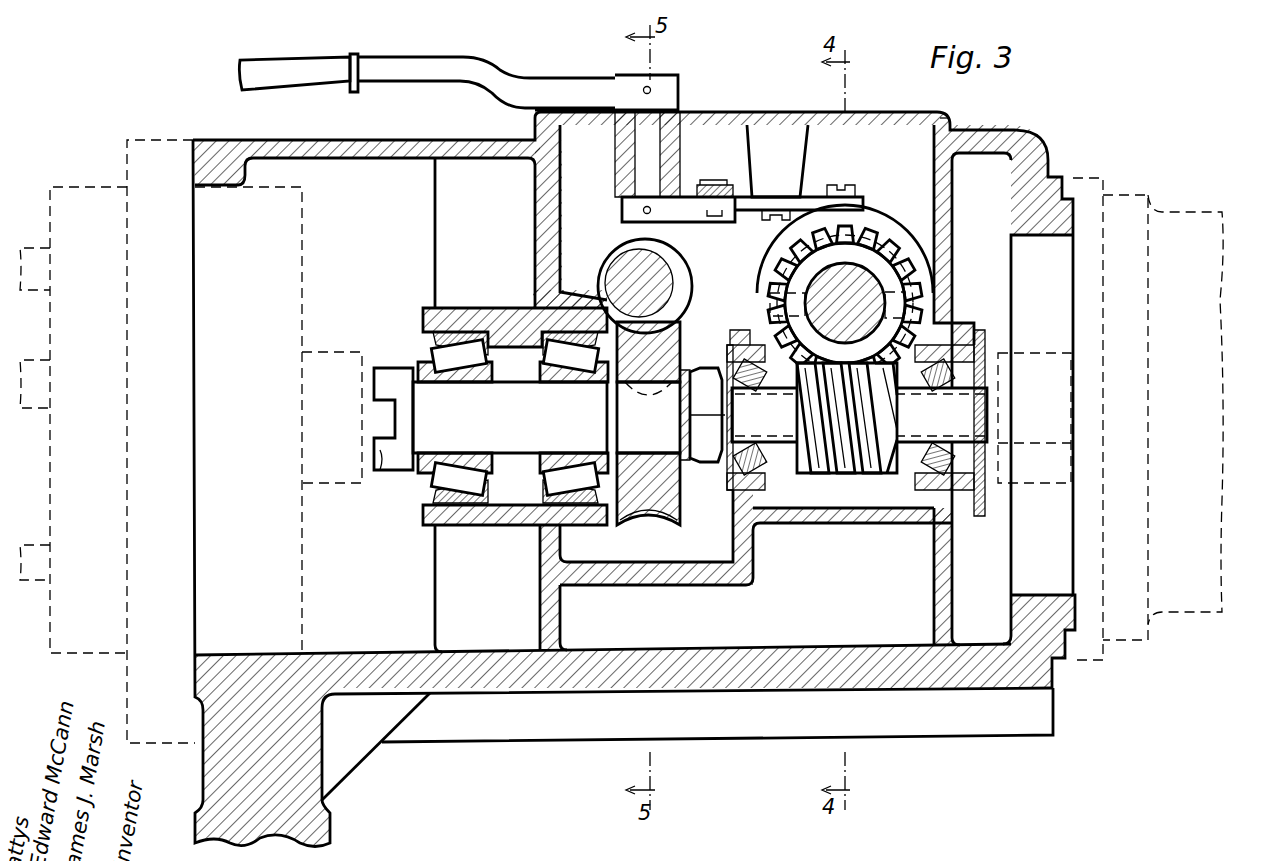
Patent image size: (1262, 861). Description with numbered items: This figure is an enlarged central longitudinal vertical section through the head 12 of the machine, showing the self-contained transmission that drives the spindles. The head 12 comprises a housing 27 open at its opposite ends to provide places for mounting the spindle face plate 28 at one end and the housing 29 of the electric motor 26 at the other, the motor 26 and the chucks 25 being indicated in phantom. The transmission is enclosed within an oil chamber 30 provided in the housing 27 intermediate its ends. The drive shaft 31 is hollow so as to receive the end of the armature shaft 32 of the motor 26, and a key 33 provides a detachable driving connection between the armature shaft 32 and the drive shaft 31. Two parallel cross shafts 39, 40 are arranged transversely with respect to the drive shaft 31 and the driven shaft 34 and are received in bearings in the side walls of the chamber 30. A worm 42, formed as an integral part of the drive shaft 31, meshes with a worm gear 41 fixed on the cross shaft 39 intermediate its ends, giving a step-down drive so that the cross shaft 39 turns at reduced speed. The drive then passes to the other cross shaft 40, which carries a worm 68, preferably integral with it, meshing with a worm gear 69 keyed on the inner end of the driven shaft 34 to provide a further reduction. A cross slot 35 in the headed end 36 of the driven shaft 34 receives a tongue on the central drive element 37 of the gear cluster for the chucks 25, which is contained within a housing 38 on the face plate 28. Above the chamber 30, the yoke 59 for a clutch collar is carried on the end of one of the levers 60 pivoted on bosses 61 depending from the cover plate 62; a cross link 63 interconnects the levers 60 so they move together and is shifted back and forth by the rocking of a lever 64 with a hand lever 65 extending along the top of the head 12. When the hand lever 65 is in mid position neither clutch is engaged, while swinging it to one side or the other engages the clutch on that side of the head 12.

The head 12 is at (1048, 133).
The chucks 25 is at (50, 240).
The motor 26 is at (1205, 214).
The housing 27 is at (414, 140).
The spindle face plate 28 is at (128, 140).
The housing of the electric motor 29 is at (1103, 183).
The oil chamber 30 is at (928, 252).
The drive shaft 31 is at (859, 415).
The armature shaft 32 is at (995, 440).
The key 33 is at (990, 392).
The driven shaft 34 is at (510, 407).
The cross slot 35 is at (380, 470).
The headed end 36 is at (400, 368).
The central drive element 37 is at (320, 483).
The housing 38 is at (302, 293).
The cross shaft 39 is at (770, 300).
The cross shaft 40 is at (680, 292).
The worm gear 41 is at (860, 262).
The worm 42 is at (835, 482).
The yoke 59 is at (775, 246).
The levers 60 is at (825, 197).
The bosses 61 is at (777, 161).
The cover plate 62 is at (950, 122).
The cross link 63 is at (698, 185).
The lever 64 is at (622, 222).
The hand lever 65 is at (497, 65).
The worm 68 is at (680, 262).
The worm gear 69 is at (705, 370).